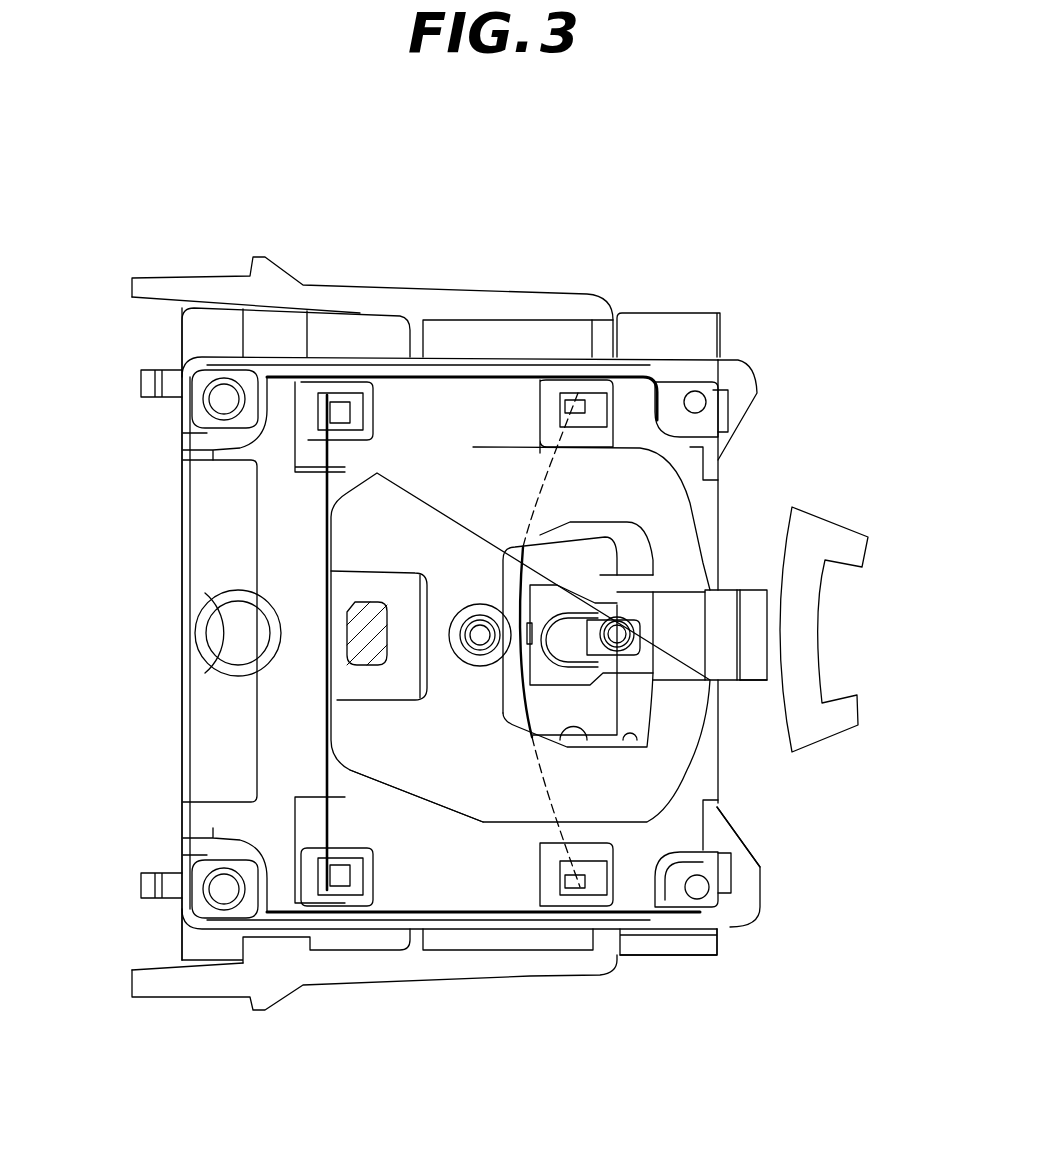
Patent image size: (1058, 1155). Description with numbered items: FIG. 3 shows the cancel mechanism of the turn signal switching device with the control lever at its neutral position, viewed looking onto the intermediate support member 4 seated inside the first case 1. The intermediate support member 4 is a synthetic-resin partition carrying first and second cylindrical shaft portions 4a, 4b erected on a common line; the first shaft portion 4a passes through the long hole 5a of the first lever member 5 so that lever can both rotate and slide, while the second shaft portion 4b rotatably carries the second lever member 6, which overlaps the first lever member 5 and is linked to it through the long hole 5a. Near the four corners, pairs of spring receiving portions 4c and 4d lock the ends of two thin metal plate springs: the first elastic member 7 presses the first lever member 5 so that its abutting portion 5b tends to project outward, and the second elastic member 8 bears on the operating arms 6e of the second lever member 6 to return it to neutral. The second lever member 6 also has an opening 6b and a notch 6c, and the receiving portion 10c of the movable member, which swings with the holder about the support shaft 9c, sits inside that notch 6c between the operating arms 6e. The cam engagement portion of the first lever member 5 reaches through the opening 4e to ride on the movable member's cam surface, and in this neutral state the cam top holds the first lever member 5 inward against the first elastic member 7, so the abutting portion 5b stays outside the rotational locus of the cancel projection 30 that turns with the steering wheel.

The first case 1 is at (180, 919).
The intermediate support member 4 is at (395, 882).
The first shaft portion 4a is at (617, 633).
The second shaft portion 4b is at (480, 633).
The spring receiving portion 4c is at (600, 358).
The spring receiving portion 4d is at (352, 395).
The opening 4e is at (607, 733).
The first lever member 5 is at (723, 603).
The long hole 5a is at (720, 813).
The abutting portion 5b is at (752, 667).
The second lever member 6 is at (503, 797).
The opening 6b is at (718, 953).
The notch 6c is at (317, 672).
The operating arm 6e is at (440, 760).
The first elastic member 7 is at (522, 560).
The second elastic member 8 is at (333, 487).
The support shaft 9c is at (207, 632).
The receiving portion 10c is at (360, 613).
The cancel projection 30 is at (805, 648).